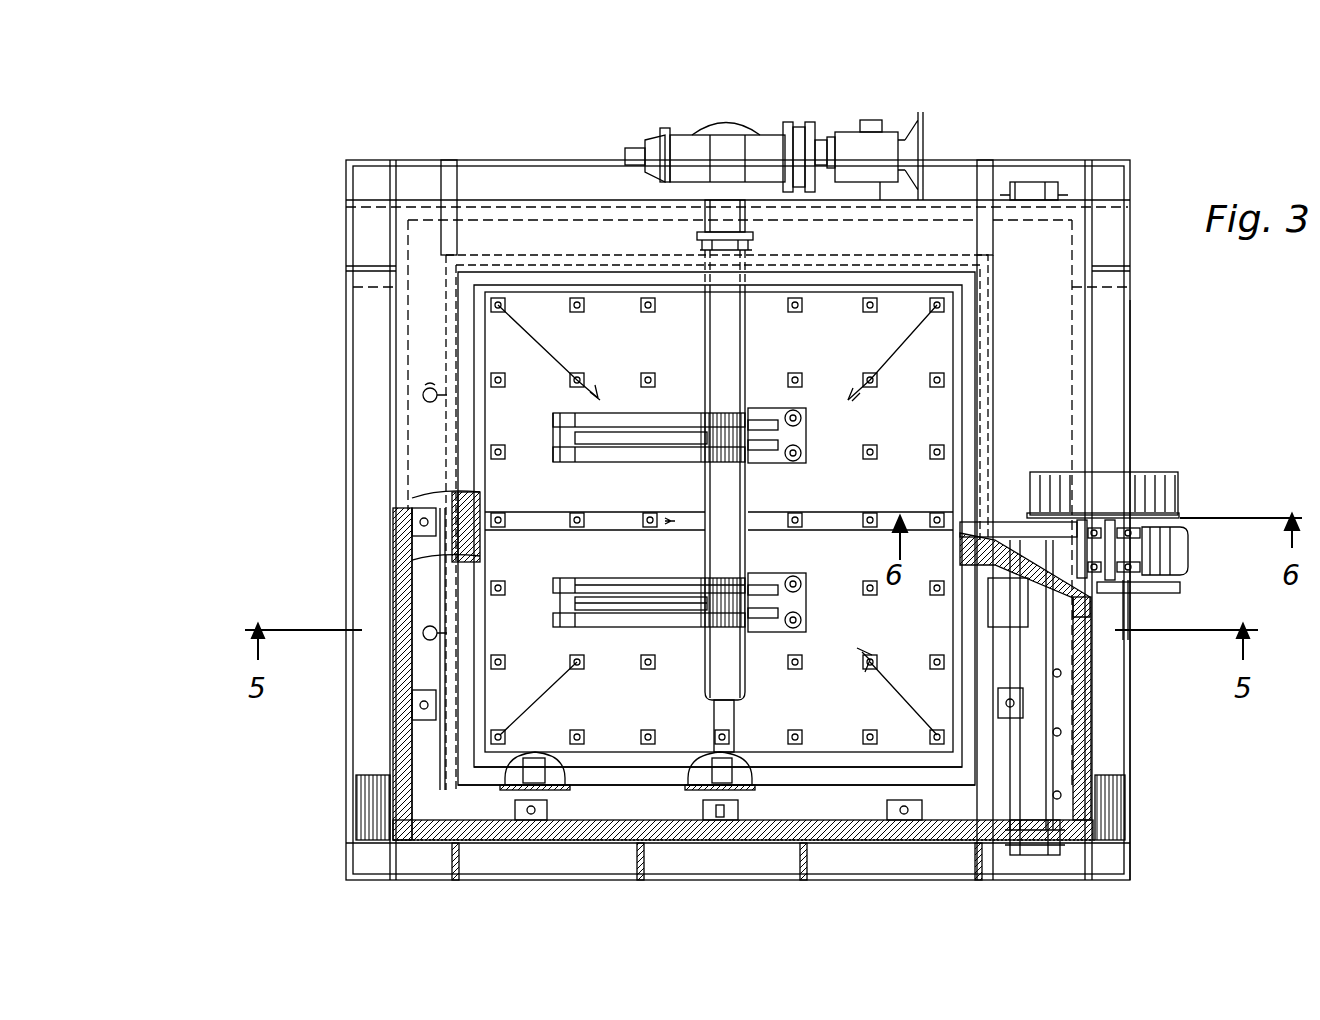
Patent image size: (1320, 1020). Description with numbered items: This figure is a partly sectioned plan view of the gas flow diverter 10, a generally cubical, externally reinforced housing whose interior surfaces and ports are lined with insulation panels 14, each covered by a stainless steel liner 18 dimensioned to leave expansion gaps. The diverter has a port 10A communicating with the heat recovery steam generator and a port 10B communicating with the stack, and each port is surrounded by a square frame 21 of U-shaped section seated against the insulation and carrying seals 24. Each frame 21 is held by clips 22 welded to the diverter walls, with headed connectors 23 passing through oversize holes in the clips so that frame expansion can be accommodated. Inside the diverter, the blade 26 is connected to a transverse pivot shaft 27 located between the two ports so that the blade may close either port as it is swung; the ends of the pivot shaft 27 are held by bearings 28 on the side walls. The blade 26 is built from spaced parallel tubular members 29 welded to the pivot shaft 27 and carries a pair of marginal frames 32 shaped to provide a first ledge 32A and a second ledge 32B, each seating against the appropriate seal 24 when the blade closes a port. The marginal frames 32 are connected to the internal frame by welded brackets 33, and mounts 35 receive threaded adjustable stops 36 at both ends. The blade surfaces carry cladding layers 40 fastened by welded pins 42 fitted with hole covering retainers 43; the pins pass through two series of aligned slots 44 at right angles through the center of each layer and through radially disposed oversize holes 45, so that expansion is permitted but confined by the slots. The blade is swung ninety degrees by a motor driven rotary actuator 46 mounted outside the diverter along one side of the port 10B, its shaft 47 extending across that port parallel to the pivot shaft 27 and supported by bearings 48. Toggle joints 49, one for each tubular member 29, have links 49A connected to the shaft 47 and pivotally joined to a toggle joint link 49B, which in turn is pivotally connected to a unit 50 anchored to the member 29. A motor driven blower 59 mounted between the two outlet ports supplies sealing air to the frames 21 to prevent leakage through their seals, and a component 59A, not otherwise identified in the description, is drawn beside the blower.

The gas flow diverter 10 is at (346, 338).
The diverter port 10A is at (1133, 380).
The diverter port 10B is at (962, 408).
The insulation panels 14 is at (603, 828).
The stainless steel liner 18 is at (648, 828).
The square frame 21 is at (405, 552).
The clips 22 is at (425, 515).
The headed connectors 23 is at (405, 528).
The seals 24 is at (480, 547).
The blade 26 is at (663, 498).
The pivot shaft 27 is at (1055, 712).
The bearings 28 is at (1035, 182).
The tubular members 29 is at (1000, 610).
The marginal frames 32 is at (452, 665).
The first ledge 32A is at (596, 762).
The second ledge 32B is at (627, 778).
The brackets 33 is at (507, 778).
The mounts 35 is at (392, 672).
The adjustable stops 36 is at (420, 400).
The cladding layer 40 is at (605, 300).
The pins 42 is at (503, 390).
The retainers 43 is at (642, 378).
The aligned slots 44 is at (572, 516).
The oversize holes 45 is at (930, 733).
The motor driven rotary actuator 46 is at (880, 148).
The shaft 47 is at (748, 358).
The bearings 48 is at (756, 245).
The toggle joints 49 is at (684, 410).
The links 49A is at (632, 608).
The toggle joint link 49B is at (614, 610).
The unit 50 is at (808, 430).
The motor driven blower 59 is at (1180, 490).
The drive motor 59A is at (1188, 552).